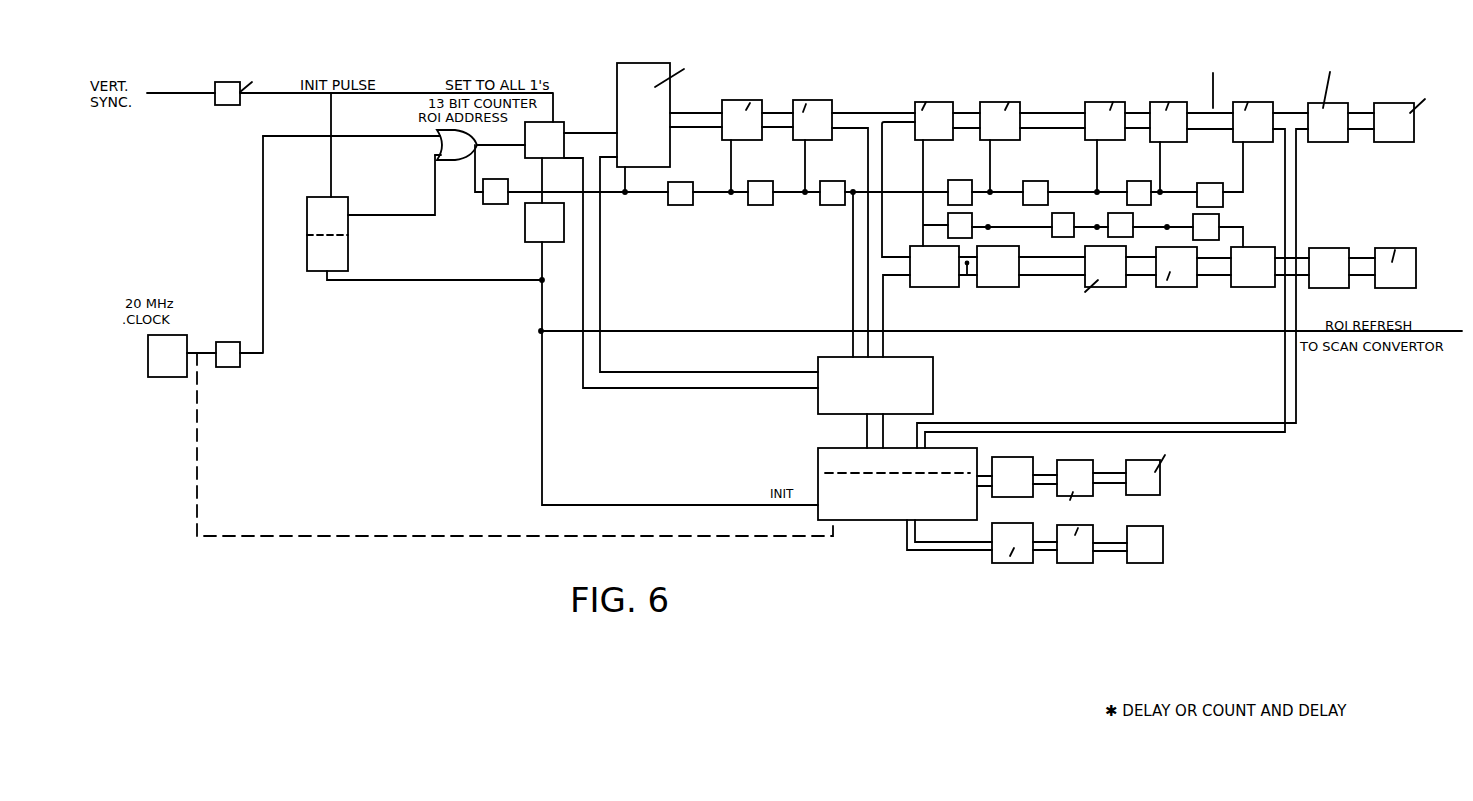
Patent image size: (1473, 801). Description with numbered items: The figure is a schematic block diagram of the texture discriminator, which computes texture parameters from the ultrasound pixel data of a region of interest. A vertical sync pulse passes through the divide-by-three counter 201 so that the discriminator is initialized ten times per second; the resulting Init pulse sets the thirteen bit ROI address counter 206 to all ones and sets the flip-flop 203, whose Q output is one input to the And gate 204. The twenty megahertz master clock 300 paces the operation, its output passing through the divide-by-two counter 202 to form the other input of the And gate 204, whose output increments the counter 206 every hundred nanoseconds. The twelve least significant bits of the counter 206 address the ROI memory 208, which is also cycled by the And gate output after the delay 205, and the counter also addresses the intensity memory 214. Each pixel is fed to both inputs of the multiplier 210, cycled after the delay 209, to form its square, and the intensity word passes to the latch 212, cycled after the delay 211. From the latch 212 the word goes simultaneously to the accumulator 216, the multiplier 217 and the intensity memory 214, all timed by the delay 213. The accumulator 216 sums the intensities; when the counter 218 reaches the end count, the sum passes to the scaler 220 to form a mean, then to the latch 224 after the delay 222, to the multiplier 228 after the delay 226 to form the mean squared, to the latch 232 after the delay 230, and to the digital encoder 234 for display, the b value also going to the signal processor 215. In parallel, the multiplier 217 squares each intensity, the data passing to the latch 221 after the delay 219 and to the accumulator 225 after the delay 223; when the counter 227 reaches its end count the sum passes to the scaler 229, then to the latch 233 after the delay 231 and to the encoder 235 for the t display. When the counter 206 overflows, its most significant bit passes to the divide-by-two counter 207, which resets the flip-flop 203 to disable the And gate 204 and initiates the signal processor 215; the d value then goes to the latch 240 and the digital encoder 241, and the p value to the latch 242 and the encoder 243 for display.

The ÷3 counter 201 is at (220, 98).
The ÷2 counter 202 is at (232, 351).
The flip-flop 203 is at (347, 260).
The And gate 204 is at (438, 147).
The delay 205 is at (483, 195).
The 13 bit ROI address counter 206 is at (563, 125).
The ÷2 counter 207 is at (525, 240).
The ROI memory 208 is at (650, 73).
The delay 209 is at (683, 186).
The multiplier 210 is at (723, 107).
The delay 211 is at (761, 186).
The latch 212 is at (828, 107).
The delay 213 is at (831, 186).
The intensity memory 214 is at (835, 356).
The signal processor 215 is at (827, 465).
The accumulator 216 is at (950, 112).
The multiplier 217 is at (932, 277).
The counter 218 is at (948, 188).
The delay 219 is at (948, 227).
The scaler 220 is at (977, 100).
The latch 221 is at (1009, 277).
The delay 222 is at (1037, 190).
The delay 223 is at (1060, 213).
The latch 224 is at (1087, 110).
The accumulator 225 is at (1112, 282).
The delay 226 is at (1141, 188).
The counter 227 is at (1122, 221).
The multiplier 228 is at (1150, 108).
The scaler 229 is at (1188, 278).
The delay 230 is at (1216, 171).
The delay 231 is at (1212, 228).
The latch 232 is at (1265, 110).
The latch 233 is at (1232, 283).
The digital encoder 234 is at (1332, 135).
The encoder 235 is at (1325, 262).
The latch 240 is at (1028, 465).
The digital encoder 241 is at (1076, 470).
The latch 242 is at (1027, 553).
The encoder 243 is at (1083, 560).
The 20 MHz master clock 300 is at (165, 366).